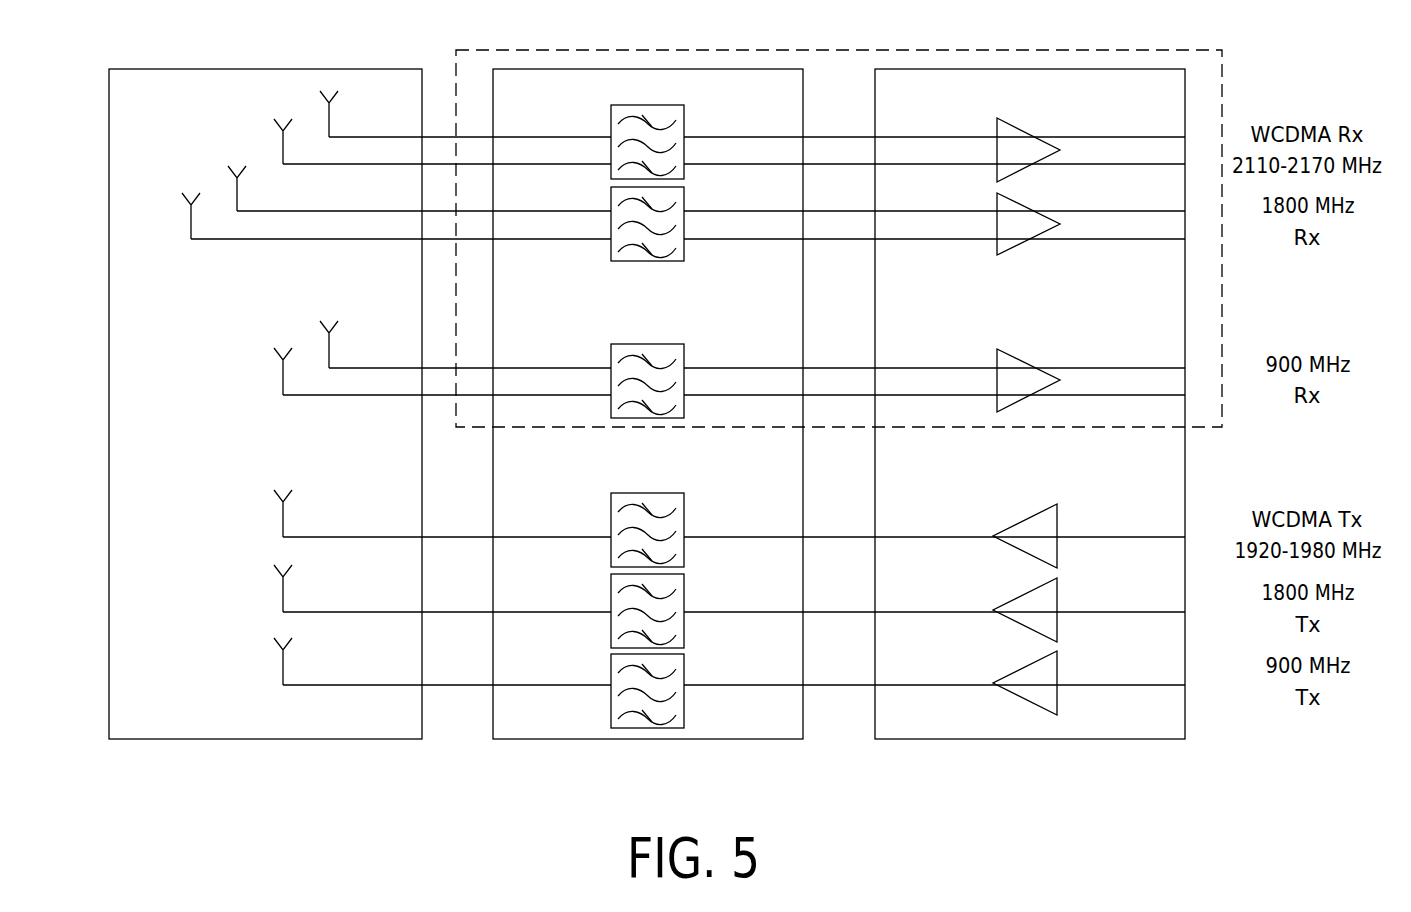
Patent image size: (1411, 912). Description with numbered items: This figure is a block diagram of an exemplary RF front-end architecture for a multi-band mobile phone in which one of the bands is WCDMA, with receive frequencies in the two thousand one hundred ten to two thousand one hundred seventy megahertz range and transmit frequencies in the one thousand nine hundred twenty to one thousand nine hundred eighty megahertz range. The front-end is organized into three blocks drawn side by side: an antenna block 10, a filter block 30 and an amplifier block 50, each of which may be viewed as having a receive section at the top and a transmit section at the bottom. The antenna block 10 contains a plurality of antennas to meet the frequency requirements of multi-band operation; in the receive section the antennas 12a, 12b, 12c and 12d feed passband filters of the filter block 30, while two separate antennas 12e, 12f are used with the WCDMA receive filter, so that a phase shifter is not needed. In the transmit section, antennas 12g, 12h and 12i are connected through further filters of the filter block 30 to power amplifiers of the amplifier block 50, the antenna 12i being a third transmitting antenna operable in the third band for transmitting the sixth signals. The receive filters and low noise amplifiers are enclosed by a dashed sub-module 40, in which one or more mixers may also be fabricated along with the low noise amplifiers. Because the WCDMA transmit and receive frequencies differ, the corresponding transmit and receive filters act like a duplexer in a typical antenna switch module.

The antenna block 10 is at (267, 739).
The filter block 30 is at (650, 739).
The sub-module 40 is at (838, 50).
The amplifier block 50 is at (1030, 739).
The antenna 12a is at (237, 197).
The antenna 12b is at (191, 222).
The antenna 12c is at (329, 353).
The antenna 12d is at (283, 380).
The separate antenna 12e is at (329, 123).
The separate antenna 12f is at (283, 147).
The antenna 12g is at (283, 522).
The antenna 12h is at (283, 596).
The third transmitting antenna 12i is at (283, 669).